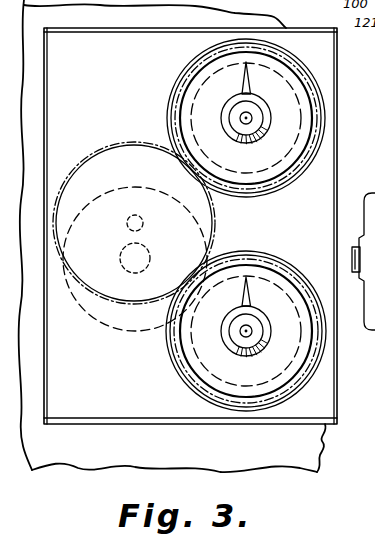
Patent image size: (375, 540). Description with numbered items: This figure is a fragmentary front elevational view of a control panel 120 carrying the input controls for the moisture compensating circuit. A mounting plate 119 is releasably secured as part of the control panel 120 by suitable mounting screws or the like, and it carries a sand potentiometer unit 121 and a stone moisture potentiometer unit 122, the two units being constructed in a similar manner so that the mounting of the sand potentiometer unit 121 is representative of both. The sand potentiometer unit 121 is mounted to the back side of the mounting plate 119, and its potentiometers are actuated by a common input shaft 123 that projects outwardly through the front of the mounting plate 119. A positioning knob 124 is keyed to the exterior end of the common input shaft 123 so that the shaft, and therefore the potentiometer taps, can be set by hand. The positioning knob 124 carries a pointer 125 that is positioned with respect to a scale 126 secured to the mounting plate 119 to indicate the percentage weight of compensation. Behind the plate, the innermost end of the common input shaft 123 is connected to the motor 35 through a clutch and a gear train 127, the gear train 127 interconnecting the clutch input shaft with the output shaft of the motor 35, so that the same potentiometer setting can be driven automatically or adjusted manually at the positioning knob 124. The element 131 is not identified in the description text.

The motor 35 is at (114, 325).
The mounting plate 119 is at (326, 180).
The control panel 120 is at (321, 458).
The sand potentiometer unit 121 is at (216, 327).
The stone moisture potentiometer unit 122 is at (184, 82).
The common input shaft 123 is at (240, 330).
The positioning knob 124 is at (240, 353).
The pointer 125 is at (249, 298).
The scale 126 is at (262, 268).
The gear train 127 is at (134, 210).
The disc center hole 131 is at (143, 226).